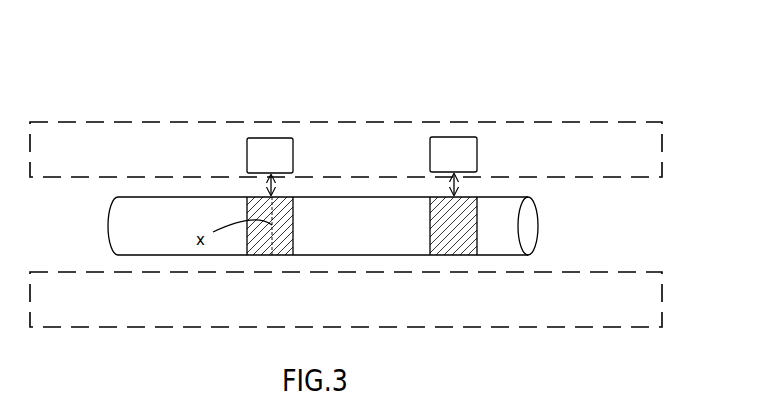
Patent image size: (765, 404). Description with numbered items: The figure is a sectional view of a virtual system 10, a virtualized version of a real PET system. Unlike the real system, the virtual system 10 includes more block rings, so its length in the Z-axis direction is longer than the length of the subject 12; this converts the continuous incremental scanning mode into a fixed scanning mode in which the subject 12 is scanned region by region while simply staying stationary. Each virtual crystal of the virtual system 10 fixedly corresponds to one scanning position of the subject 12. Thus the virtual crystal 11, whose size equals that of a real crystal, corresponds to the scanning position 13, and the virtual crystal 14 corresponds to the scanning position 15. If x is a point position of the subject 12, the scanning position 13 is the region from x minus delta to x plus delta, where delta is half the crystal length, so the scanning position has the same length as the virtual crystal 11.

The virtual system 10 is at (374, 62).
The virtual crystal 11 is at (275, 138).
The subject 12 is at (533, 232).
The scanning position 13 is at (293, 227).
The virtual crystal 14 is at (459, 137).
The scanning position 15 is at (457, 245).